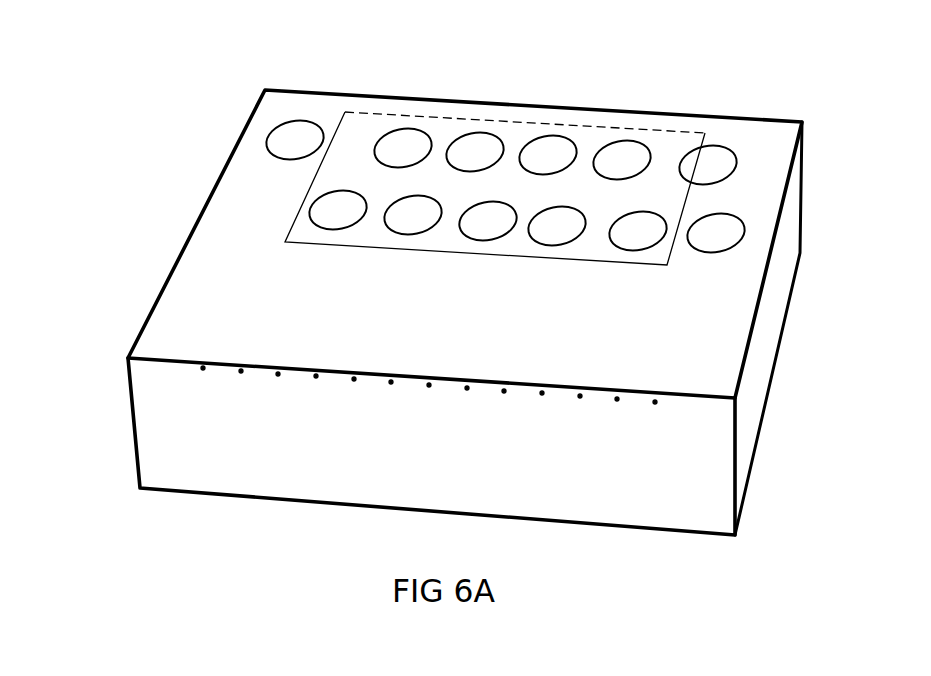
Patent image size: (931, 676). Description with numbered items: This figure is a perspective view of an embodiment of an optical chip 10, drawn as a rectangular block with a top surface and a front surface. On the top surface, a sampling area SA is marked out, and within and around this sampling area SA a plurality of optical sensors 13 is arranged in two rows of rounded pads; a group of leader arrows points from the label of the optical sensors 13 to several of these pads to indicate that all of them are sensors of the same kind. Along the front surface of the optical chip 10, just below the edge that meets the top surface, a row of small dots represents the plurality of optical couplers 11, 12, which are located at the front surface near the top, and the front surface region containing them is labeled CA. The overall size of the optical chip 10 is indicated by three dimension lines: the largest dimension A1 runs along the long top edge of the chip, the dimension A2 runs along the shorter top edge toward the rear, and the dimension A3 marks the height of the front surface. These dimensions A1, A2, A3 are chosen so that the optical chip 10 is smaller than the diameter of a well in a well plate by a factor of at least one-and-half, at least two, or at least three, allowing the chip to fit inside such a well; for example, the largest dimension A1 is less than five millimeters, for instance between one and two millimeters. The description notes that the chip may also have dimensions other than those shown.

The optical chip 10 is at (137, 80).
The optical coupler 11 is at (429, 412).
The optical coupler 12 is at (310, 388).
The optical sensor 13 is at (465, 248).
The sampling area SA is at (509, 204).
The contact area CA is at (441, 421).
The largest dimension A1 is at (811, 86).
The dimension A2 is at (262, 88).
The dimension A3 is at (135, 487).